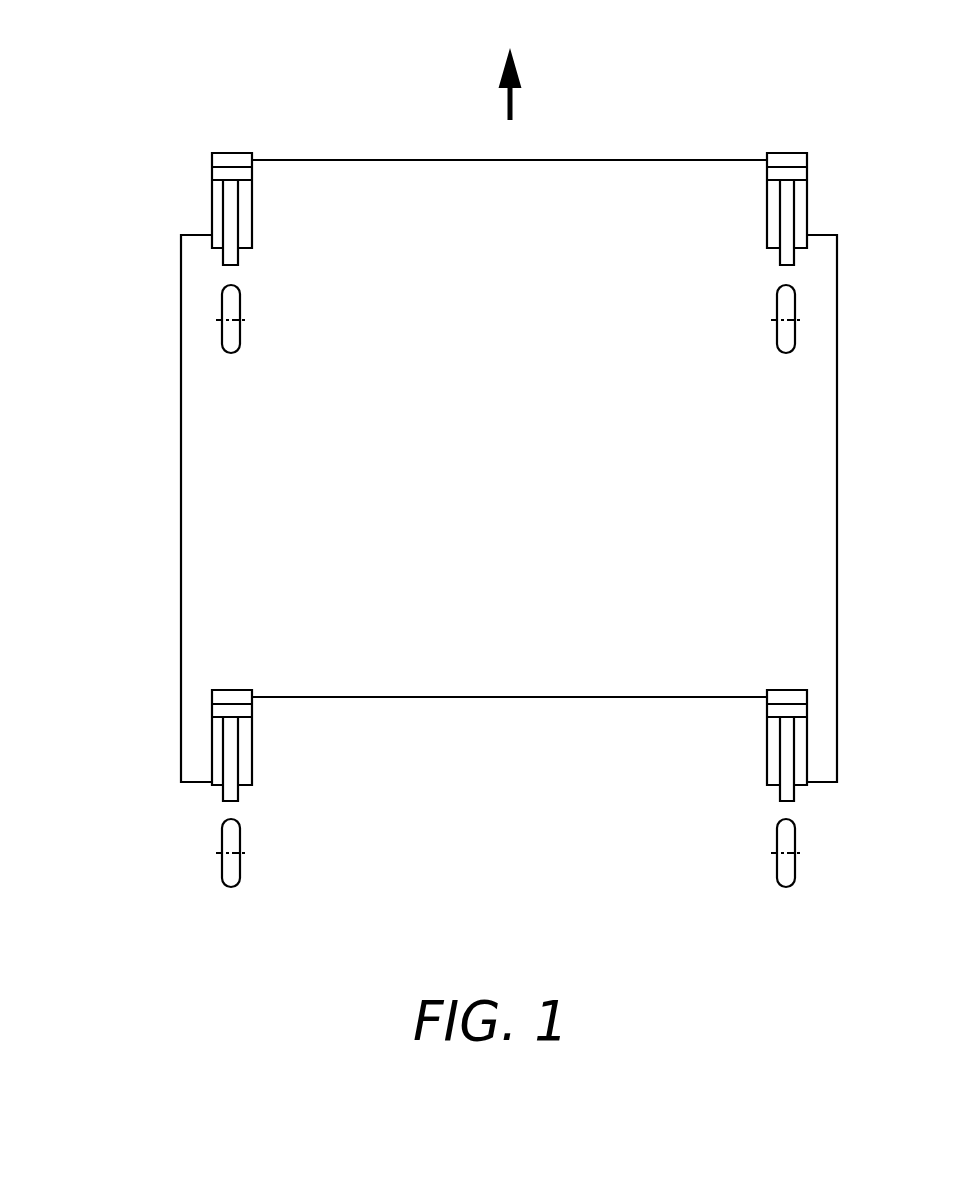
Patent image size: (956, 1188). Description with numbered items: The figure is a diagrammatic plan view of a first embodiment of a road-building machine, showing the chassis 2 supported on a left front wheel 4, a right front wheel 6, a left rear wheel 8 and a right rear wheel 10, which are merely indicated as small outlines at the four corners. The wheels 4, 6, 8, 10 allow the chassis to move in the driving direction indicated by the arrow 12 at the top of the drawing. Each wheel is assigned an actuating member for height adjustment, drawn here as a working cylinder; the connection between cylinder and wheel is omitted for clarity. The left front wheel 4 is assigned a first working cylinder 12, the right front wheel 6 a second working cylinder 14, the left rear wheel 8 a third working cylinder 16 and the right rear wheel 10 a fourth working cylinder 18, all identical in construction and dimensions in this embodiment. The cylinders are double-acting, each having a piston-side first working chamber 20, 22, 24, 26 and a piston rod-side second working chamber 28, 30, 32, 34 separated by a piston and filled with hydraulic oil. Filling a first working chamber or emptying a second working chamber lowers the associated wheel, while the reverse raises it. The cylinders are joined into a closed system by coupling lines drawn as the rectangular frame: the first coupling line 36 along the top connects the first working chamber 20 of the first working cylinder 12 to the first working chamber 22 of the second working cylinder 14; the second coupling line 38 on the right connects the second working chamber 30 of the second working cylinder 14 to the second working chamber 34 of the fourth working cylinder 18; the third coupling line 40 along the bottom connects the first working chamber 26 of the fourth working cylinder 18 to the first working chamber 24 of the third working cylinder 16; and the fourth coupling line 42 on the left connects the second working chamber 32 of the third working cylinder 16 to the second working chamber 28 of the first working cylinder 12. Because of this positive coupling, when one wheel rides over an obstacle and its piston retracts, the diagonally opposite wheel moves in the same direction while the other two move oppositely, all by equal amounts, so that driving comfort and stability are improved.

The chassis 2 is at (104, 78).
The left front wheel 4 is at (242, 333).
The right front wheel 6 is at (777, 333).
The left rear wheel 8 is at (242, 868).
The right rear wheel 10 is at (777, 868).
The first working cylinder 12 is at (271, 205).
The second working cylinder 14 is at (748, 205).
The third working cylinder 16 is at (271, 747).
The fourth working cylinder 18 is at (748, 747).
The first working chamber of first working cylinder 20 is at (228, 162).
The first working chamber of second working cylinder 22 is at (785, 162).
The first working chamber of third working cylinder 24 is at (228, 697).
The first working chamber of fourth working cylinder 26 is at (785, 697).
The second working chamber of first working cylinder 28 is at (243, 228).
The second working chamber of second working cylinder 30 is at (776, 228).
The second working chamber of third working cylinder 32 is at (243, 765).
The second working chamber of fourth working cylinder 34 is at (776, 765).
The first coupling line 36 is at (482, 160).
The second coupling line 38 is at (836, 480).
The third coupling line 40 is at (483, 696).
The fourth coupling line 42 is at (182, 480).